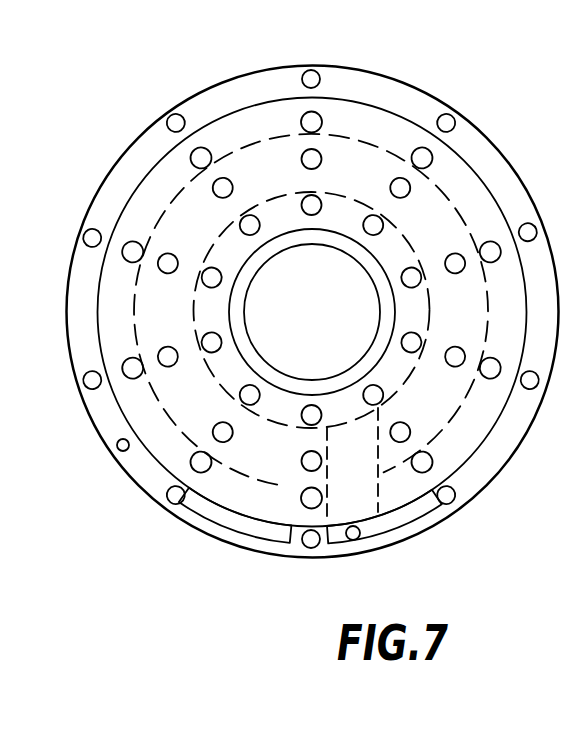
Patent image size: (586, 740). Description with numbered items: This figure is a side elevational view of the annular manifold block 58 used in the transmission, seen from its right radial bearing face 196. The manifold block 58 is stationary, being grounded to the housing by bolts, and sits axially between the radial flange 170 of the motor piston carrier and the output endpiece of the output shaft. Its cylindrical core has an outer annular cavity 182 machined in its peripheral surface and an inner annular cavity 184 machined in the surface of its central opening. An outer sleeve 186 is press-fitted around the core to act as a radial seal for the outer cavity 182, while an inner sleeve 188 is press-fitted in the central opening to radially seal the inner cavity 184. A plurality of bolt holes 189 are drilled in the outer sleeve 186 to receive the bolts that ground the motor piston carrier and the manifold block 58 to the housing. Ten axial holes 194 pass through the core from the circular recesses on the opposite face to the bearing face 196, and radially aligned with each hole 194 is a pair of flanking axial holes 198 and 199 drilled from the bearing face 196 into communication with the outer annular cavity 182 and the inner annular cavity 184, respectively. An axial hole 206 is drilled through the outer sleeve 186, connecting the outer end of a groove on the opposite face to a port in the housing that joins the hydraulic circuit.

The manifold block 58 is at (505, 498).
The radial flange 170 is at (447, 225).
The annular cavity 182 is at (276, 485).
The annular cavity 184 is at (272, 421).
The outer sleeve 186 is at (487, 155).
The inner sleeve 188 is at (343, 244).
The bolt holes 189 is at (317, 80).
The axial hole 194 is at (387, 185).
The radial bearing face 196 is at (276, 463).
The axial hole 198 is at (300, 123).
The axial hole 199 is at (210, 277).
The axial hole 206 is at (354, 541).